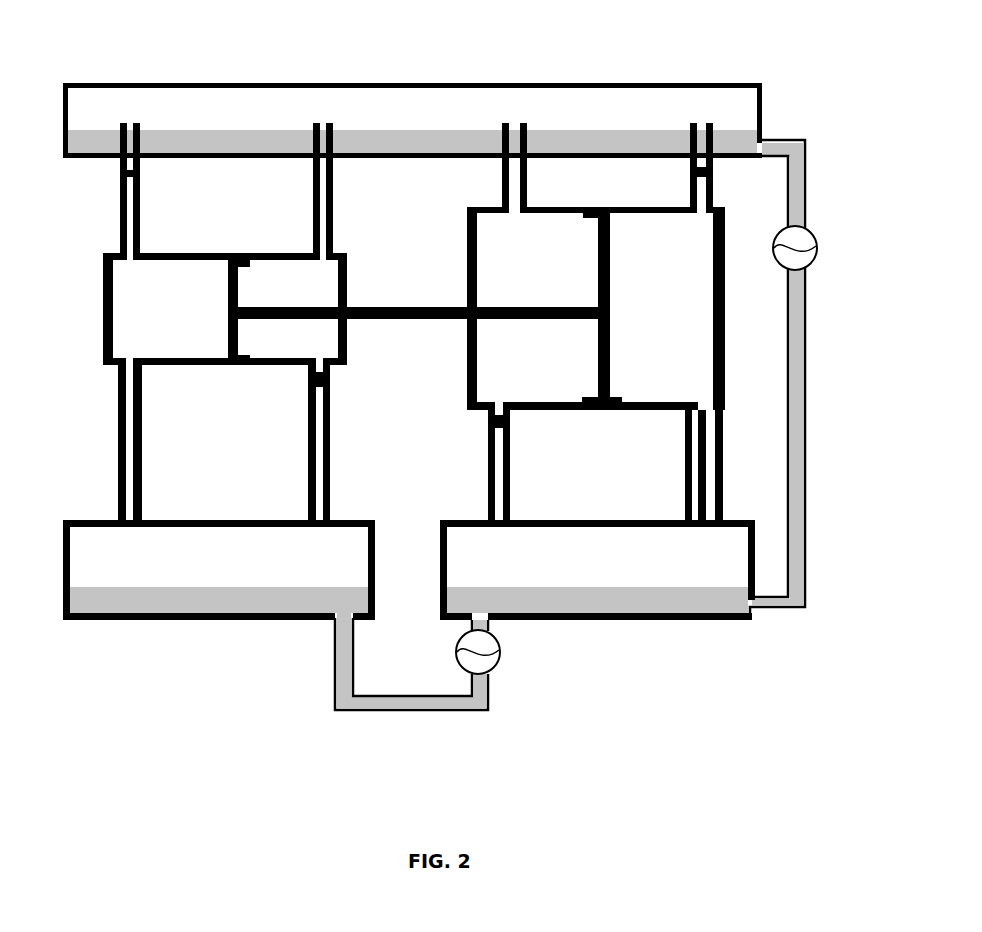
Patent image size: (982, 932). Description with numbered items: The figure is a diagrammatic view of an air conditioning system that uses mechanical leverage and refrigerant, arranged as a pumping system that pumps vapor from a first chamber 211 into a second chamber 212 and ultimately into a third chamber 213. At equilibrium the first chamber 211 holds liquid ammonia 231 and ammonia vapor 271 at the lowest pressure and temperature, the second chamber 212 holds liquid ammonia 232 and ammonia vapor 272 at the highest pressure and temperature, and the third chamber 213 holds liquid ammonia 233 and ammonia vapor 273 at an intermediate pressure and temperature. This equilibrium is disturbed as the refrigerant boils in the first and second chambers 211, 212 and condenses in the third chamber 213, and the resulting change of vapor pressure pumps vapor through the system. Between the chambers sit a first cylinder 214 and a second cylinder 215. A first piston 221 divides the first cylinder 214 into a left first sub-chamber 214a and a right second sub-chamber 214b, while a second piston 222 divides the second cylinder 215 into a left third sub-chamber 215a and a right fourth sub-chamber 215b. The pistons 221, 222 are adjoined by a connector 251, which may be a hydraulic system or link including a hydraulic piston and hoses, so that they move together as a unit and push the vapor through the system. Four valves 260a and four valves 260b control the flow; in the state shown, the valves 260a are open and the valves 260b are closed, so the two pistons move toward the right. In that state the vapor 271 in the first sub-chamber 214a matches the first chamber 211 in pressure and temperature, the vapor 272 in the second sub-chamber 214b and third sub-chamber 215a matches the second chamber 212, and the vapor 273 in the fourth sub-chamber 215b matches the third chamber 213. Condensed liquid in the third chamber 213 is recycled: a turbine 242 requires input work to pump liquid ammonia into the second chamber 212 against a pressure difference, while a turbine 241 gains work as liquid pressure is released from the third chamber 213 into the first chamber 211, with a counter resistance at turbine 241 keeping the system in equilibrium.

The first chamber 211 is at (211, 612).
The second chamber 212 is at (412, 83).
The third chamber 213 is at (597, 601).
The first cylinder 214 is at (225, 390).
The first sub-chamber 214a is at (189, 356).
The second sub-chamber 214b is at (309, 350).
The second cylinder 215 is at (596, 367).
The third sub-chamber 215a is at (549, 375).
The fourth sub-chamber 215b is at (672, 373).
The first piston 221 is at (217, 286).
The second piston 222 is at (583, 247).
The liquid ammonia 231 is at (203, 605).
The liquid ammonia 232 is at (395, 128).
The liquid ammonia 233 is at (547, 605).
The turbine 241 is at (502, 678).
The turbine 242 is at (820, 264).
The connector 251 is at (413, 335).
The valves 260a is at (512, 167).
The valves 260b is at (120, 172).
The ammonia vapor 271 is at (128, 310).
The ammonia vapor 272 is at (226, 100).
The ammonia vapor 273 is at (697, 302).